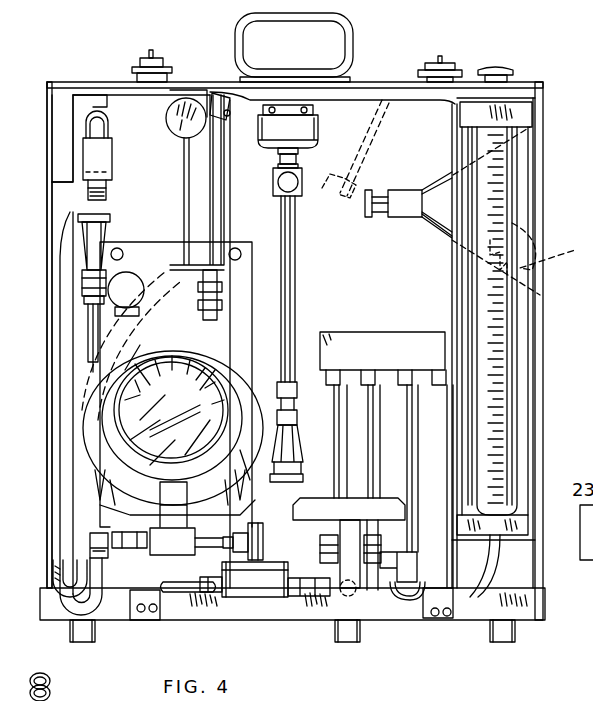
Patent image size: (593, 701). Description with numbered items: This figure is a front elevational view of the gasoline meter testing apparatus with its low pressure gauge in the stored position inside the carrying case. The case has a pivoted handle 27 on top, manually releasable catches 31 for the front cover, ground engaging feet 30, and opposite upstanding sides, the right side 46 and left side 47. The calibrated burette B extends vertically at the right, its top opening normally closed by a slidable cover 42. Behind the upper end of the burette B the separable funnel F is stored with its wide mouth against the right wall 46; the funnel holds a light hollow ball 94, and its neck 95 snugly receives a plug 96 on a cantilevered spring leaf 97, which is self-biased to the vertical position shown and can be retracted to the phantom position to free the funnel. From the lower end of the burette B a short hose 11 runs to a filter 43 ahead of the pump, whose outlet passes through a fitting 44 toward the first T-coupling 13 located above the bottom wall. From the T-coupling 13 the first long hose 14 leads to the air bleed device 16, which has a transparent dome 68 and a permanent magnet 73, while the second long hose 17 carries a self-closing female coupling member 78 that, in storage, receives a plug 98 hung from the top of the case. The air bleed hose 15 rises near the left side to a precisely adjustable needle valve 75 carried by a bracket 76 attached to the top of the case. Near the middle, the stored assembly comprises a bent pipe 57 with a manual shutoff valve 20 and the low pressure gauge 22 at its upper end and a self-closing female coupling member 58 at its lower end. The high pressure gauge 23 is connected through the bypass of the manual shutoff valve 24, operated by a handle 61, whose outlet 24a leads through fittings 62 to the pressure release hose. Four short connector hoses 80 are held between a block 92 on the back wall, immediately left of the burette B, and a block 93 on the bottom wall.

The short hose 11 is at (170, 583).
The first T-coupling 13 is at (107, 538).
The first long flexible hose 14 is at (98, 608).
The air bleed hose 15 is at (148, 318).
The air bleed device 16 is at (112, 160).
The second long flexible hose 17 is at (90, 327).
The manual shutoff valve 20 is at (273, 178).
The low pressure gauge 22 is at (318, 131).
The high pressure gauge 23 is at (178, 349).
The manual shutoff valve 24 is at (172, 518).
The outlet of valve 24a is at (148, 532).
The pivoted handle 27 is at (355, 44).
The ground engaging feet 30 is at (82, 642).
The manually releasable catches 31 is at (142, 60).
The slidable cover 42 is at (500, 68).
The filter 43 is at (257, 585).
The fitting 44 is at (412, 566).
The right side wall 46 is at (543, 188).
The left side wall 47 is at (48, 193).
The bent pipe 57 is at (297, 247).
The self-closing female coupling member 58 is at (298, 440).
The handle 61 is at (263, 540).
The fittings 62 is at (127, 556).
The transparent dome 68 is at (101, 125).
The permanent magnet 73 is at (72, 131).
The needle valve 75 is at (175, 128).
The bracket 76 is at (168, 92).
The self-closing female coupling member 78 is at (110, 228).
The connector hose 80 is at (365, 466).
The block 92 is at (383, 358).
The block 93 is at (380, 593).
The hollow ball 94 is at (522, 211).
The neck of funnel 95 is at (406, 190).
The plug 96 is at (371, 218).
The cantilevered leaf 97 is at (355, 149).
The plug 98 is at (106, 204).
The calibrated burette B is at (505, 337).
The separable funnel F is at (432, 228).